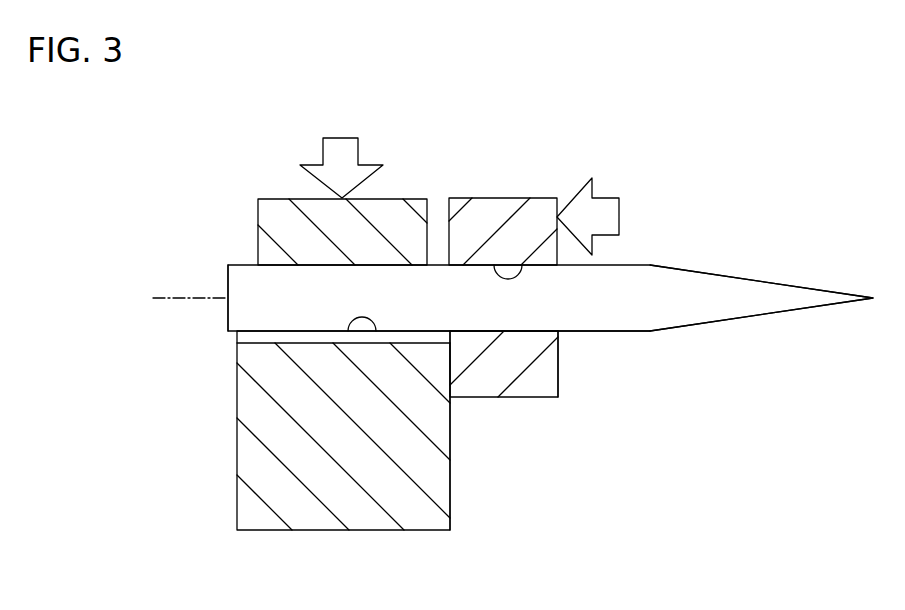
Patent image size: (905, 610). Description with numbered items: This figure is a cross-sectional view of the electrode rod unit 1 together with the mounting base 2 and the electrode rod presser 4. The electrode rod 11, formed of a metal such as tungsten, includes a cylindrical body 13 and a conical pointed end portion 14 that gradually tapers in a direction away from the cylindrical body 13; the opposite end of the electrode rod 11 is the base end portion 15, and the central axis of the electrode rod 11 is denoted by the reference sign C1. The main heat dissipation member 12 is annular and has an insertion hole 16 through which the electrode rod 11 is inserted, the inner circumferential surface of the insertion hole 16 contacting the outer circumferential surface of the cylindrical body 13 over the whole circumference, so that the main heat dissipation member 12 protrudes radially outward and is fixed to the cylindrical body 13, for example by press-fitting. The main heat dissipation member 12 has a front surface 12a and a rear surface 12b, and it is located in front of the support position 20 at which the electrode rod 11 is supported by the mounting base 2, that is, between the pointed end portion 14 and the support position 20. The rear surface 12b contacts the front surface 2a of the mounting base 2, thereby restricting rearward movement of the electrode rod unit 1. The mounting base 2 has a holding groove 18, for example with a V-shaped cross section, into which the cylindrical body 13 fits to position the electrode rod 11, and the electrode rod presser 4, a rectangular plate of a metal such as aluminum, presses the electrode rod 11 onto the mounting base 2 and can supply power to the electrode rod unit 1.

The electrode rod unit 1 is at (645, 183).
The mounting base 2 is at (237, 458).
The front surface of the mounting base 2a is at (451, 488).
The electrode rod presser 4 is at (280, 199).
The electrode rod 11 is at (627, 263).
The main heat dissipation member 12 is at (512, 397).
The front surface of the main heat dissipation member 12a is at (558, 379).
The rear surface of the main heat dissipation member 12b is at (450, 373).
The cylindrical body 13 is at (602, 332).
The pointed end portion 14 is at (735, 302).
The base end portion 15 is at (228, 320).
The insertion hole 16 is at (520, 277).
The holding groove 18 is at (378, 332).
The support position 20 is at (375, 256).
The central axis of the electrode rod C1 is at (162, 298).